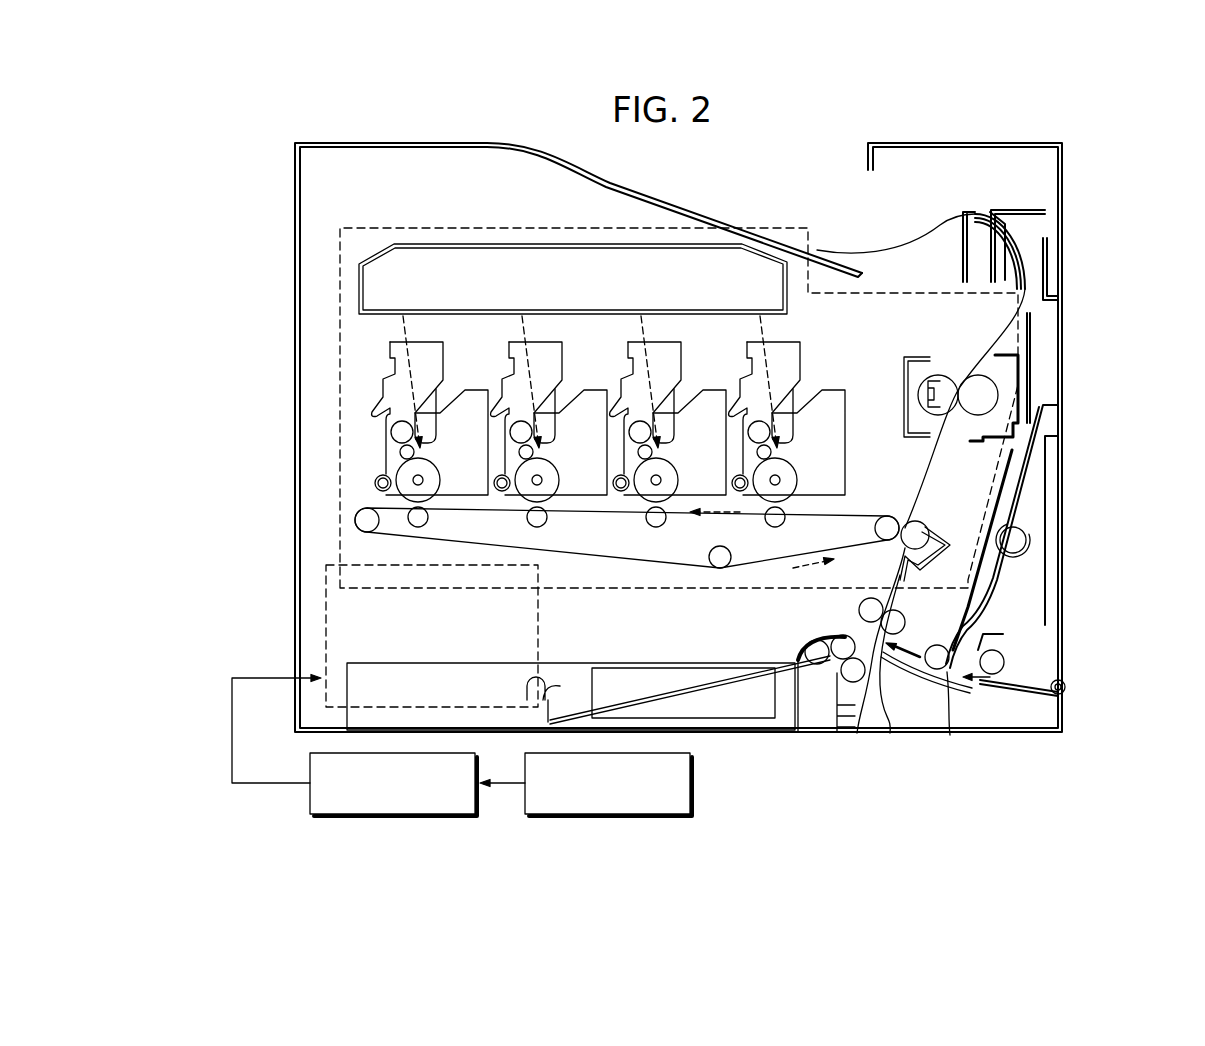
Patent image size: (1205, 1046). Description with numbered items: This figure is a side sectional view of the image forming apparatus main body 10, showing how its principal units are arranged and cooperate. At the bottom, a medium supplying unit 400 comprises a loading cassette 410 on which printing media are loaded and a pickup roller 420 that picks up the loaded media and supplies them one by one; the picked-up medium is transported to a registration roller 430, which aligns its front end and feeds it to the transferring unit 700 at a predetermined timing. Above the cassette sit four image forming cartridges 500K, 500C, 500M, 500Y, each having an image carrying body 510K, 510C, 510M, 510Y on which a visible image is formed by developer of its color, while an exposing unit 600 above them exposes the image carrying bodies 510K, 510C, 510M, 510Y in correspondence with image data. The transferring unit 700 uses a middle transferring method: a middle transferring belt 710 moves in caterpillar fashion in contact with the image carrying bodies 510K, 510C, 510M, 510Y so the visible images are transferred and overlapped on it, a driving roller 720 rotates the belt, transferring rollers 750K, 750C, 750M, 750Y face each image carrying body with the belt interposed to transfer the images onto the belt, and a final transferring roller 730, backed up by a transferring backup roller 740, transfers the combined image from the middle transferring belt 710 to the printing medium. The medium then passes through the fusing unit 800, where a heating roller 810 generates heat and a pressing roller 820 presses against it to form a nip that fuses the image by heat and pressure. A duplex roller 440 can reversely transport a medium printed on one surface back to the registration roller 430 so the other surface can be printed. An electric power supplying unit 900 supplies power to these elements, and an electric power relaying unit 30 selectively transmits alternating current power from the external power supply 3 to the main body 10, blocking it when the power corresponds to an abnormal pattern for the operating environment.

The image forming apparatus main body 10 is at (1086, 116).
The exposing unit 600 is at (357, 283).
The image forming cartridge 500K is at (419, 344).
The image forming cartridge 500C is at (538, 344).
The image forming cartridge 500M is at (657, 344).
The image forming cartridge 500Y is at (776, 344).
The image carrying body 510K is at (421, 483).
The image carrying body 510C is at (540, 483).
The image carrying body 510M is at (658, 484).
The image carrying body 510Y is at (778, 484).
The transferring unit 700 is at (679, 549).
The middle transferring belt 710 is at (595, 564).
The driving roller 720 is at (355, 520).
The final transferring roller 730 is at (930, 537).
The transferring backup roller 740 is at (882, 516).
The transferring roller 750K is at (420, 527).
The transferring roller 750C is at (538, 527).
The transferring roller 750M is at (657, 527).
The transferring roller 750Y is at (776, 527).
The fusing unit 800 is at (1052, 390).
The heating roller 810 is at (958, 378).
The pressing roller 820 is at (985, 400).
The electric power supplying unit 900 is at (325, 638).
The medium supplying unit 400 is at (908, 730).
The loading cassette 410 is at (845, 660).
The pickup roller 420 is at (816, 661).
The registration roller 430 is at (890, 650).
The duplex roller 440 is at (985, 665).
The electric power relaying unit 30 is at (395, 814).
The external power supply 3 is at (612, 814).